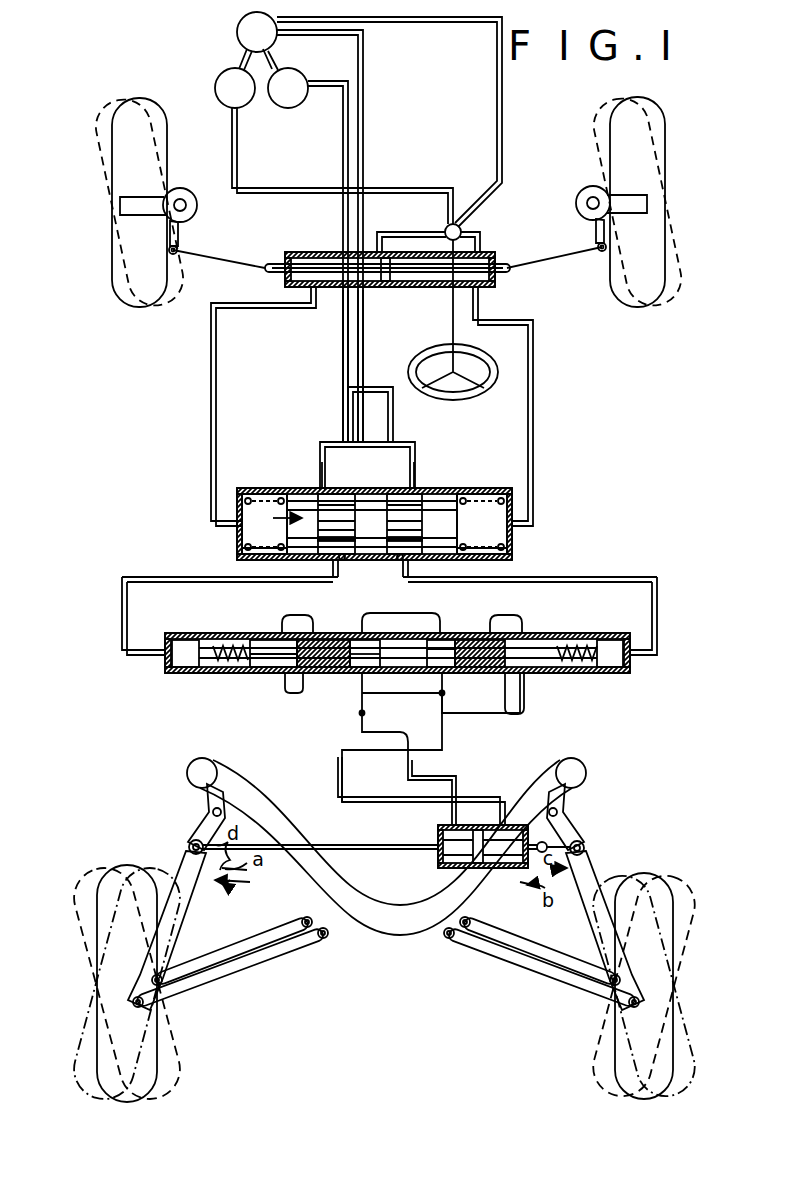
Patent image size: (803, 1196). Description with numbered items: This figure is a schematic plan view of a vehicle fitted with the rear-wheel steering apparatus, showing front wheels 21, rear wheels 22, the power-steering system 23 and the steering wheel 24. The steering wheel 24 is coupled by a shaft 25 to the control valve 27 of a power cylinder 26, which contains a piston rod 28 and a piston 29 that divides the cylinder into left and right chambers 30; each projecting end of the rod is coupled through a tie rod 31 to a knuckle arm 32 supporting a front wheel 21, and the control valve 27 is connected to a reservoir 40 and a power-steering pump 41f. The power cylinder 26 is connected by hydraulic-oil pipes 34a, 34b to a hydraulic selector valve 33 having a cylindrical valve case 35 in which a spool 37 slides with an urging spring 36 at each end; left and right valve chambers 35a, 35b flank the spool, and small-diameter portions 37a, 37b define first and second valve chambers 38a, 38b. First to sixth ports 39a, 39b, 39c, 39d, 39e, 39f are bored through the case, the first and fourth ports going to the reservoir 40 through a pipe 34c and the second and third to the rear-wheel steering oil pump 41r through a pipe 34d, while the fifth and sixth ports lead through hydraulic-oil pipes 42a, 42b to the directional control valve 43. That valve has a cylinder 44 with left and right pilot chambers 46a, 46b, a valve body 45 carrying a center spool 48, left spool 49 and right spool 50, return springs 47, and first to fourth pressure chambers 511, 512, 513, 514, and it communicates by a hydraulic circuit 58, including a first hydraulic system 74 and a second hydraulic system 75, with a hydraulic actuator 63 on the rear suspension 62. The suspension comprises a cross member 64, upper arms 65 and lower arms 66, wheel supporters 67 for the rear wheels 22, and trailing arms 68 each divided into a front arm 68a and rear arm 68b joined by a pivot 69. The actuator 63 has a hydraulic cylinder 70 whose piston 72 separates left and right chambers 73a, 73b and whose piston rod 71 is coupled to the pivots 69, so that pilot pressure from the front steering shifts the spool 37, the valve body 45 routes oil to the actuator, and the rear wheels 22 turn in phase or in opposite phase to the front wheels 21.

The front wheels 21 is at (110, 162).
The rear wheels 22 is at (95, 920).
The power-steering system 23 is at (484, 206).
The steering wheel 24 is at (493, 382).
The shaft 25 is at (453, 332).
The power cylinder 26 is at (396, 232).
The control valve 27 is at (462, 231).
The piston rod 28 is at (324, 255).
The piston 29 is at (386, 282).
The chambers 30 is at (291, 255).
The tie rod 31 is at (224, 260).
The knuckle arm 32 is at (192, 194).
The hydraulic selector valve 33 is at (456, 484).
The hydraulic-oil pipe 34a is at (211, 388).
The hydraulic-oil pipe 34b is at (533, 385).
The pipe 34c is at (369, 320).
The pipe 34d is at (338, 320).
The valve case 35 is at (288, 487).
The left valve chamber 35a is at (242, 520).
The right valve chamber 35b is at (500, 520).
The urging spring 36 is at (248, 547).
The spool 37 is at (370, 560).
The small-diameter portion 37a is at (320, 542).
The small-diameter portion 37b is at (420, 535).
The first valve chamber 38a is at (337, 560).
The second valve chamber 38b is at (407, 560).
The first port 39a is at (320, 485).
The second port 39b is at (348, 446).
The third port 39c is at (394, 446).
The fourth port 39d is at (417, 485).
The fifth port 39e is at (342, 562).
The sixth port 39f is at (400, 560).
The reservoir 40 is at (279, 23).
The power-steering pump 41f is at (222, 103).
The oil pump 41r is at (297, 107).
The hydraulic-oil pipe 42a is at (122, 633).
The hydraulic-oil pipe 42b is at (657, 623).
The directional control valve 43 is at (575, 633).
The cylinder 44 is at (535, 667).
The valve body 45 is at (446, 636).
The left pilot chamber 46a is at (185, 667).
The right pilot chamber 46b is at (620, 667).
The return springs 47 is at (232, 667).
The center spool 48 is at (442, 693).
The left spool 49 is at (324, 673).
The right spool 50 is at (470, 667).
The first pressure chamber 511 is at (268, 673).
The second pressure chamber 512 is at (348, 673).
The third pressure chamber 513 is at (455, 673).
The fourth pressure chamber 514 is at (525, 673).
The hydraulic circuit 58 is at (424, 764).
The rear suspension 62 is at (425, 942).
The hydraulic actuator 63 is at (530, 890).
The cross member 64 is at (398, 938).
The upper arms 65 is at (297, 940).
The lower arms 66 is at (245, 973).
The wheel supporters 67 is at (157, 1006).
The trailing arms 68 is at (177, 864).
The front arm 68a is at (209, 815).
The rear arm 68b is at (198, 897).
The pivot 69 is at (189, 842).
The hydraulic cylinder 70 is at (492, 868).
The piston rod 71 is at (368, 845).
The piston 72 is at (477, 830).
The left chamber 73a is at (440, 855).
The right chamber 73b is at (510, 868).
The first hydraulic system 74 is at (408, 780).
The second hydraulic system 75 is at (338, 789).